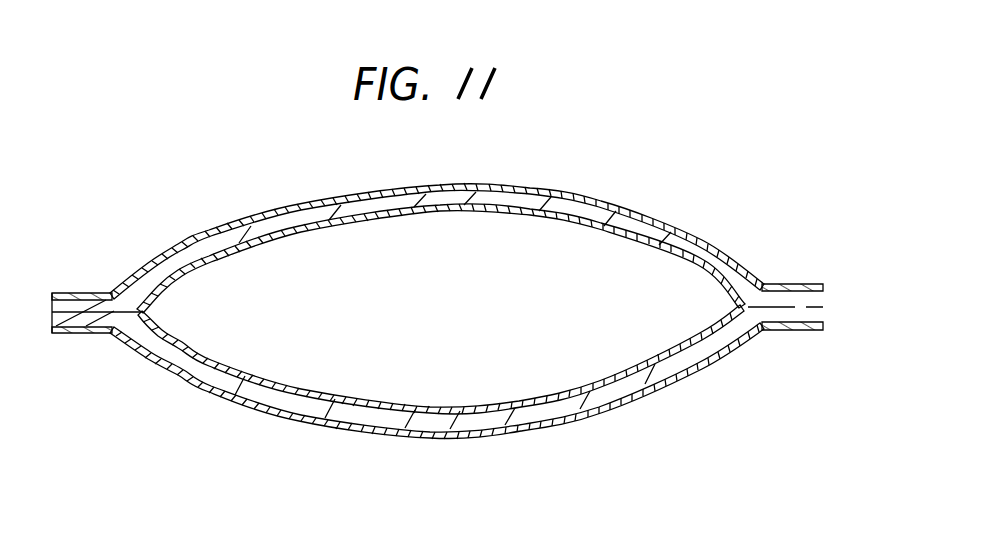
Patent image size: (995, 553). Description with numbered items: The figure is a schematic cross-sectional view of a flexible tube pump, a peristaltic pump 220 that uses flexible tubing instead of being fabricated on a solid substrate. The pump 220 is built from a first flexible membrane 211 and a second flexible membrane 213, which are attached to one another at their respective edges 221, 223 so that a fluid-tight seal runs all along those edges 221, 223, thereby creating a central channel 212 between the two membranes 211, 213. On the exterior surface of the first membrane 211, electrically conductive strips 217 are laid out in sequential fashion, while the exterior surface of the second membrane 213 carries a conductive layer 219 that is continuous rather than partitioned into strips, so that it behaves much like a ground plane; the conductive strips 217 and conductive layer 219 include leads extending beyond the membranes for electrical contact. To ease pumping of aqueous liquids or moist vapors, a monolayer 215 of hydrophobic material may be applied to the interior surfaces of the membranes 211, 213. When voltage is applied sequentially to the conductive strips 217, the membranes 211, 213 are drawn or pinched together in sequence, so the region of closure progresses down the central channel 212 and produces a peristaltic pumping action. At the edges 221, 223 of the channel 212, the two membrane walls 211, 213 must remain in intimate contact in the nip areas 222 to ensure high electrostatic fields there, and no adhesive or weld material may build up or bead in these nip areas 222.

The peristaltic pump 220 is at (555, 156).
The first flexible membrane 211 is at (640, 228).
The second flexible membrane 213 is at (575, 405).
The monolayer of hydrophobic material 215 is at (544, 216).
The electrically conductive strips 217 is at (594, 204).
The conductive layer 219 is at (473, 441).
The central channel 212 is at (460, 319).
The nip areas 222 is at (148, 312).
The edge of the membranes 223 is at (43, 312).
The edge of the membranes 221 is at (803, 308).